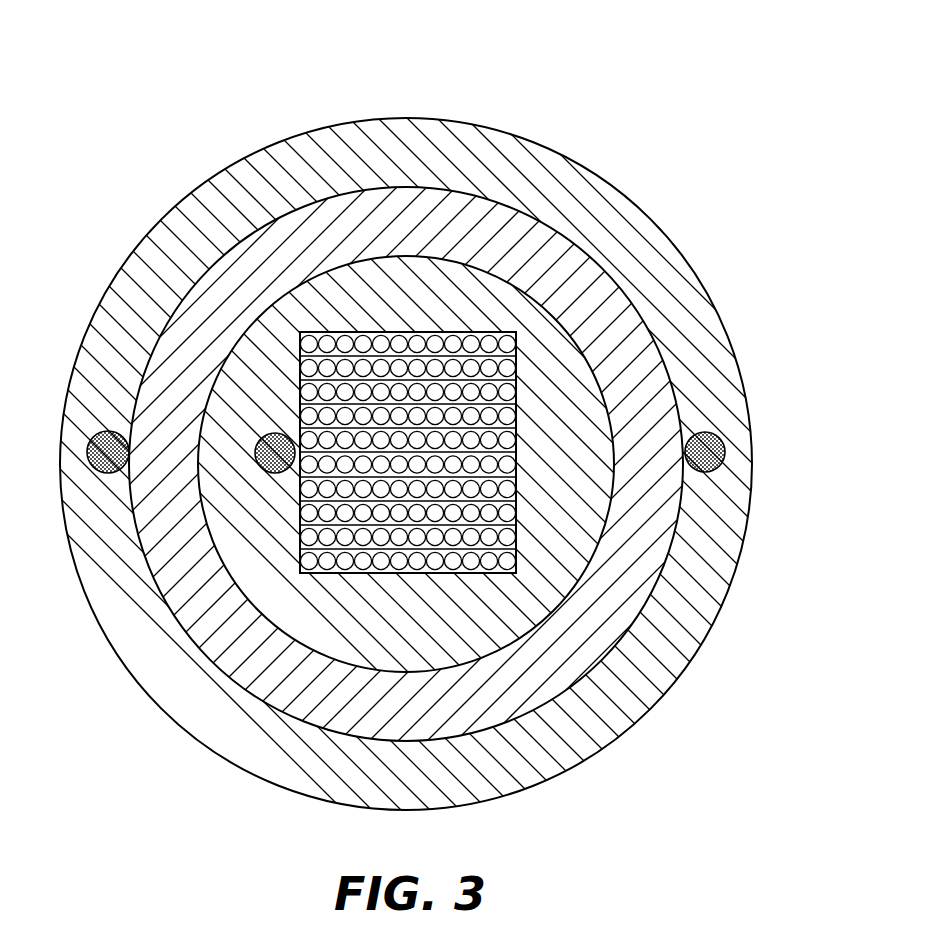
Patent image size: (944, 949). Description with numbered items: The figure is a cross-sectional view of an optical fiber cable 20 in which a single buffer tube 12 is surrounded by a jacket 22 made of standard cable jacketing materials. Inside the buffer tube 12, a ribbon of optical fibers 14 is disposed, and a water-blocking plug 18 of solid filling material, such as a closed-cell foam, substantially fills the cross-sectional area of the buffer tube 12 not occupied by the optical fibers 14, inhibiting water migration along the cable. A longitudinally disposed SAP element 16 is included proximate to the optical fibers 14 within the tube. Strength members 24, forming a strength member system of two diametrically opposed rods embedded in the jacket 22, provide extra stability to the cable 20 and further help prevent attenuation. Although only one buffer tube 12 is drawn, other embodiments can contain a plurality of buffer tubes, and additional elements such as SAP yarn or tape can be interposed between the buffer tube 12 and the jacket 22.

The optical fiber cable 20 is at (232, 66).
The jacket 22 is at (540, 172).
The buffer tube 12 is at (268, 252).
The water-blocking plug 18 is at (560, 378).
The optical fibers 14 is at (348, 500).
The SAP element 16 is at (258, 437).
The strength members 24 is at (107, 432).